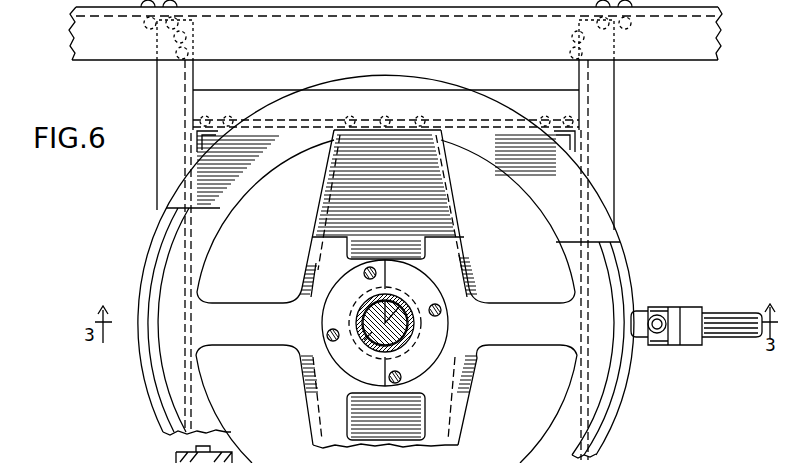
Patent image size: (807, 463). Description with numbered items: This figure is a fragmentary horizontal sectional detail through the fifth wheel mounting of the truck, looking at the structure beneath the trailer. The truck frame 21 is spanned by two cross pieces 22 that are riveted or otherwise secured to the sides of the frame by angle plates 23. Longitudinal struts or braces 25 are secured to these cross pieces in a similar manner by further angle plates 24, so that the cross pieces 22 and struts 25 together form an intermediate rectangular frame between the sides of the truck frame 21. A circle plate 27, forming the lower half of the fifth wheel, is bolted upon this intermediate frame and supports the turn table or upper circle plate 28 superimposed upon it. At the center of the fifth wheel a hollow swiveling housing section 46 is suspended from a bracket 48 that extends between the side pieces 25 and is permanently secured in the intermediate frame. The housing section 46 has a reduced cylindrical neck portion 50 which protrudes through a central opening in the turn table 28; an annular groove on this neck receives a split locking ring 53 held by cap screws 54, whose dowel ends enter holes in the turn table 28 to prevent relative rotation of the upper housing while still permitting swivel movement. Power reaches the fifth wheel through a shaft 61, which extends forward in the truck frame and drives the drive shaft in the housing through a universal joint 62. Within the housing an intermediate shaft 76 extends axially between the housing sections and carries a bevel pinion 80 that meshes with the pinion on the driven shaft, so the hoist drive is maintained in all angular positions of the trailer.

The truck frame 21 is at (82, 38).
The cross pieces 22 is at (158, 176).
The angle plates 23 is at (148, 30).
The angle plates 24 is at (222, 139).
The longitudinal struts or braces 25 is at (238, 104).
The circle plate 27 is at (598, 230).
The turn table or upper circle plate 28 is at (140, 281).
The housing section 46 is at (440, 316).
The bracket 48 is at (447, 227).
The reduced cylindrical neck portion 50 is at (408, 300).
The split locking ring 53 is at (437, 338).
The cap screws 54 is at (328, 333).
The shaft 61 is at (718, 340).
The universal joint 62 is at (660, 347).
The intermediate shaft 76 is at (392, 306).
The bevel pinion 80 is at (368, 343).